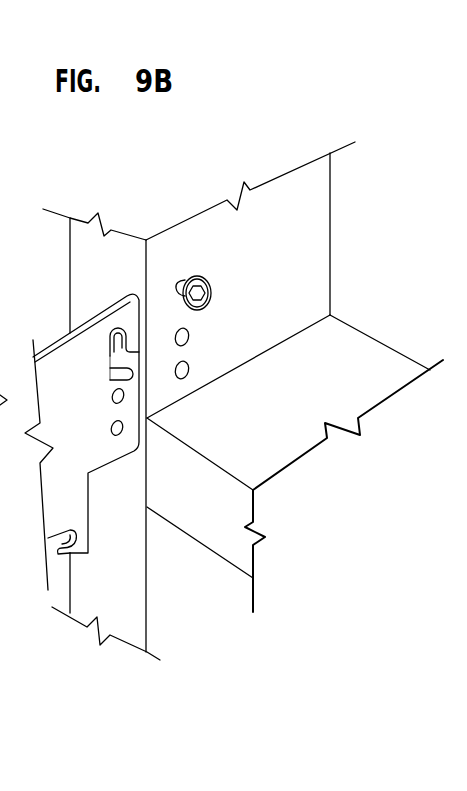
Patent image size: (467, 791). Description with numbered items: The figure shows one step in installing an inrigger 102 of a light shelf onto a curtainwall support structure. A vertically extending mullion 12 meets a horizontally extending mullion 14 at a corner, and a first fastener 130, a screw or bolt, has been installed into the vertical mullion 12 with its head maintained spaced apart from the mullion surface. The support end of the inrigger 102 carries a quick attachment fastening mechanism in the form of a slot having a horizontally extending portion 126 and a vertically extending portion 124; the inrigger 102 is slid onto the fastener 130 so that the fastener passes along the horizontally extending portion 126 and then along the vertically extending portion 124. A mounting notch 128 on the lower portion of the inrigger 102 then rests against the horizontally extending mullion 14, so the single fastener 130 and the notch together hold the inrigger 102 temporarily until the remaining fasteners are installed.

The mullion 12 is at (333, 205).
The horizontally extending mullion 14 is at (383, 341).
The inrigger 102 is at (106, 422).
The vertically extending portion 124 is at (108, 352).
The horizontally extending portion 126 is at (115, 362).
The mounting notch 128 is at (116, 491).
The first fastener 130 is at (210, 282).